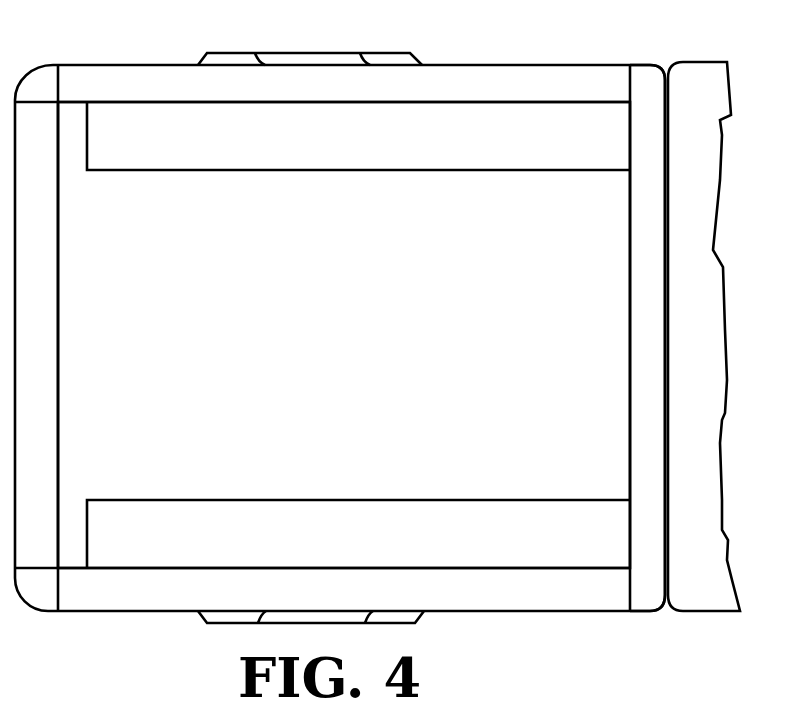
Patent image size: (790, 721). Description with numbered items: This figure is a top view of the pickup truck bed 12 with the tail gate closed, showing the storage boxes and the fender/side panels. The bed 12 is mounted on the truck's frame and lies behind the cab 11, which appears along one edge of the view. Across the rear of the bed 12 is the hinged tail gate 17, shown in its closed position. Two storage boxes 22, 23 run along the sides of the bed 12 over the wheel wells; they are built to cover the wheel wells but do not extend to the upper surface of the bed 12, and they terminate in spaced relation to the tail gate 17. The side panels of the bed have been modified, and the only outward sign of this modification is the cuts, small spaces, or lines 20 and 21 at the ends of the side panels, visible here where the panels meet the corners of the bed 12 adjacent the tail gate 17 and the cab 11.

The cab 11 is at (682, 213).
The bed 12 is at (348, 395).
The hinged tail gate 17 is at (58, 295).
The cuts, small spaces, or lines in the side panels 20 is at (630, 78).
The cuts, small spaces, or lines in the side panels 21 is at (58, 82).
The storage box 22 is at (352, 147).
The storage box 23 is at (398, 547).